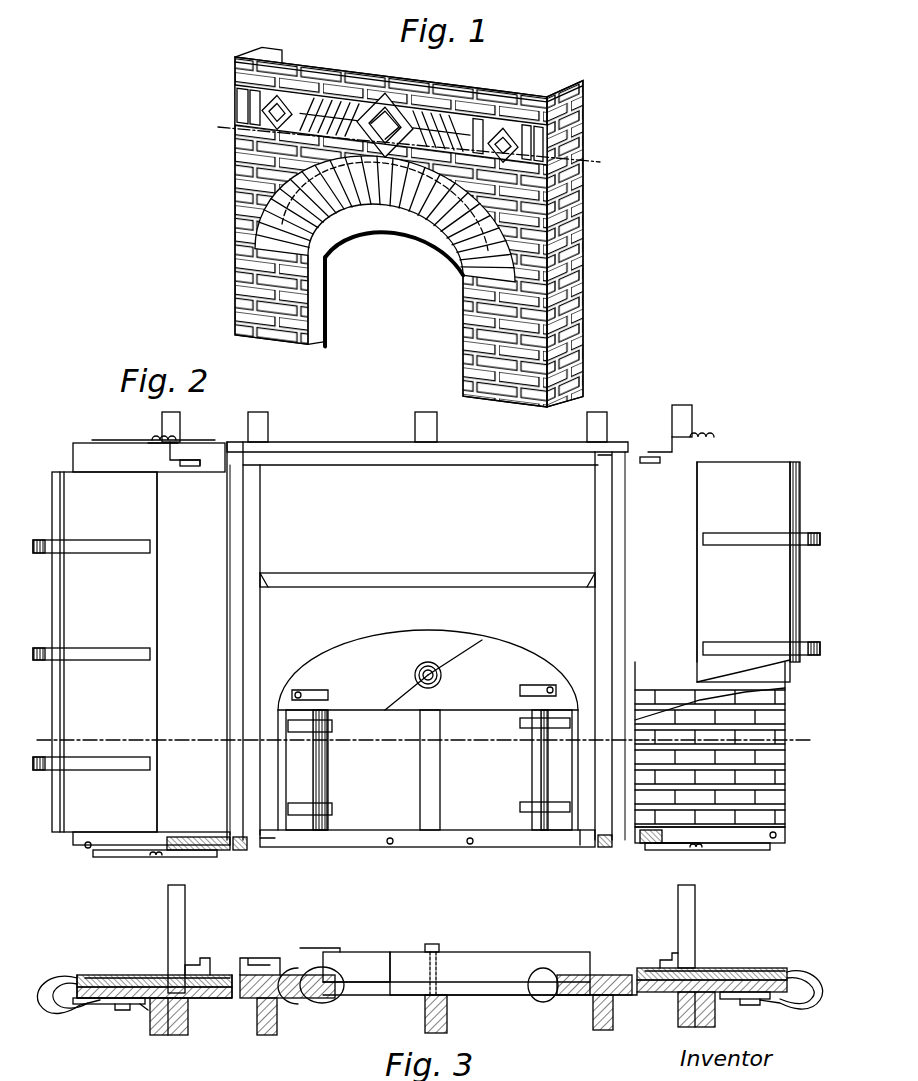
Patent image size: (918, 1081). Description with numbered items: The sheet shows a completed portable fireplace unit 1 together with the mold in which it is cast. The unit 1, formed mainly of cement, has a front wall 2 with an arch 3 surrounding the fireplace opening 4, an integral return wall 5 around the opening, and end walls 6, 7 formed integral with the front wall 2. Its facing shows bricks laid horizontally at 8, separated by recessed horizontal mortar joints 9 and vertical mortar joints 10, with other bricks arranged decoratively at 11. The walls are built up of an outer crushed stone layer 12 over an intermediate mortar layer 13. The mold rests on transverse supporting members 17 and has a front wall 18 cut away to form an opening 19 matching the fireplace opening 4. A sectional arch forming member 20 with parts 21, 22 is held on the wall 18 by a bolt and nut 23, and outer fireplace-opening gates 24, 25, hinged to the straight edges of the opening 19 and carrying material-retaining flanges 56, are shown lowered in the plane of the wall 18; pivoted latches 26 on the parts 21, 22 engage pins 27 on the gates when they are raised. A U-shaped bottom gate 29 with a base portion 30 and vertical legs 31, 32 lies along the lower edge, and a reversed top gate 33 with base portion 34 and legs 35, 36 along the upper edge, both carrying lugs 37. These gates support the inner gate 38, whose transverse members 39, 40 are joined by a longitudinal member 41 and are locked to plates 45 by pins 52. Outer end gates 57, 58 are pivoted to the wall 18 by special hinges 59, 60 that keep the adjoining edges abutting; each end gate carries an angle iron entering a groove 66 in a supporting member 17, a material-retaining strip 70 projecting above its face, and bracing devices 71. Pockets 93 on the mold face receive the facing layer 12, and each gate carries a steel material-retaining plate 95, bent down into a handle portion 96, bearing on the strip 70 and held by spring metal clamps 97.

In FIG. 1, the fireplace unit 1 is at (498, 99).
In FIG. 1, the front wall 2 is at (236, 99).
In FIG. 1, the arch 3 is at (395, 215).
In FIG. 2, the arch 3 is at (42, 740).
In FIG. 1, the fireplace opening 4 is at (375, 319).
In FIG. 1, the return wall 5 is at (324, 278).
In FIG. 1, the end wall 6 is at (278, 46).
In FIG. 1, the end wall 7 is at (575, 84).
In FIG. 1, the horizontally laid bricks 8 is at (463, 300).
In FIG. 1, the horizontal mortar joint 9 is at (547, 288).
In FIG. 1, the vertical mortar joint 10 is at (555, 357).
In FIG. 1, the decoratively arranged bricks 11 is at (372, 95).
In FIG. 2, the outer layer 12 is at (775, 710).
In FIG. 3, the outer layer 12 is at (136, 975).
In FIG. 2, the intermediate layer 13 is at (405, 484).
In FIG. 3, the intermediate layer 13 is at (80, 975).
In FIG. 1, the transverse supporting member 17 is at (205, 114).
In FIG. 2, the transverse supporting member 17 is at (268, 424).
In FIG. 3, the transverse supporting member 17 is at (170, 1036).
In FIG. 2, the front wall of mold 18 is at (700, 828).
In FIG. 3, the front wall of mold 18 is at (228, 998).
In FIG. 2, the opening 19 is at (415, 815).
In FIG. 2, the arch forming member 20 is at (404, 636).
In FIG. 2, the part of arch forming member 21 is at (365, 652).
In FIG. 3, the part of arch forming member 21 is at (360, 952).
In FIG. 2, the part of arch forming member 22 is at (530, 652).
In FIG. 3, the part of arch forming member 22 is at (482, 952).
In FIG. 2, the bolt and nut 23 is at (436, 660).
In FIG. 3, the bolt and nut 23 is at (428, 944).
In FIG. 3, the outer fireplace-opening gate 24 is at (280, 1005).
In FIG. 3, the outer fireplace-opening gate 25 is at (580, 1000).
In FIG. 2, the pivoted latch 26 is at (312, 688).
In FIG. 3, the pivoted latch 26 is at (312, 948).
In FIG. 3, the pin 27 is at (542, 1003).
In FIG. 2, the bottom gate 29 is at (507, 842).
In FIG. 2, the base portion 30 is at (330, 845).
In FIG. 2, the vertical leg 31 is at (175, 834).
In FIG. 2, the vertical leg 32 is at (680, 846).
In FIG. 2, the top gate 33 is at (352, 460).
In FIG. 2, the base portion 34 is at (492, 455).
In FIG. 2, the leg 35 is at (175, 460).
In FIG. 3, the leg 35 is at (168, 927).
In FIG. 2, the leg 36 is at (665, 452).
In FIG. 3, the leg 36 is at (695, 915).
In FIG. 2, the lug 37 is at (185, 466).
In FIG. 3, the lug 37 is at (203, 958).
In FIG. 2, the inner gate 38 is at (537, 570).
In FIG. 3, the inner gate 38 is at (262, 958).
In FIG. 2, the transverse member 39 is at (260, 540).
In FIG. 2, the transverse member 40 is at (596, 507).
In FIG. 2, the longitudinal member 41 is at (388, 573).
In FIG. 2, the plate 45 is at (280, 845).
In FIG. 2, the pin 52 is at (242, 850).
In FIG. 3, the material-retaining flange 56 is at (325, 1004).
In FIG. 2, the outer end gate 57 is at (90, 458).
In FIG. 3, the outer end gate 57 is at (100, 1004).
In FIG. 2, the outer end gate 58 is at (770, 820).
In FIG. 3, the outer end gate 58 is at (752, 1006).
In FIG. 2, the hinge 59 is at (150, 858).
In FIG. 2, the hinge 60 is at (150, 438).
In FIG. 3, the groove 66 is at (190, 1038).
In FIG. 2, the material-retaining strip 70 is at (785, 777).
In FIG. 3, the material-retaining strip 70 is at (52, 980).
In FIG. 3, the bracing device 71 is at (123, 1012).
In FIG. 2, the pocket 93 is at (748, 725).
In FIG. 2, the material-retaining plate 95 is at (533, 762).
In FIG. 3, the material-retaining plate 95 is at (112, 975).
In FIG. 2, the handle portion 96 is at (796, 480).
In FIG. 2, the spring metal clamp 97 is at (108, 556).
In FIG. 3, the spring metal clamp 97 is at (802, 968).